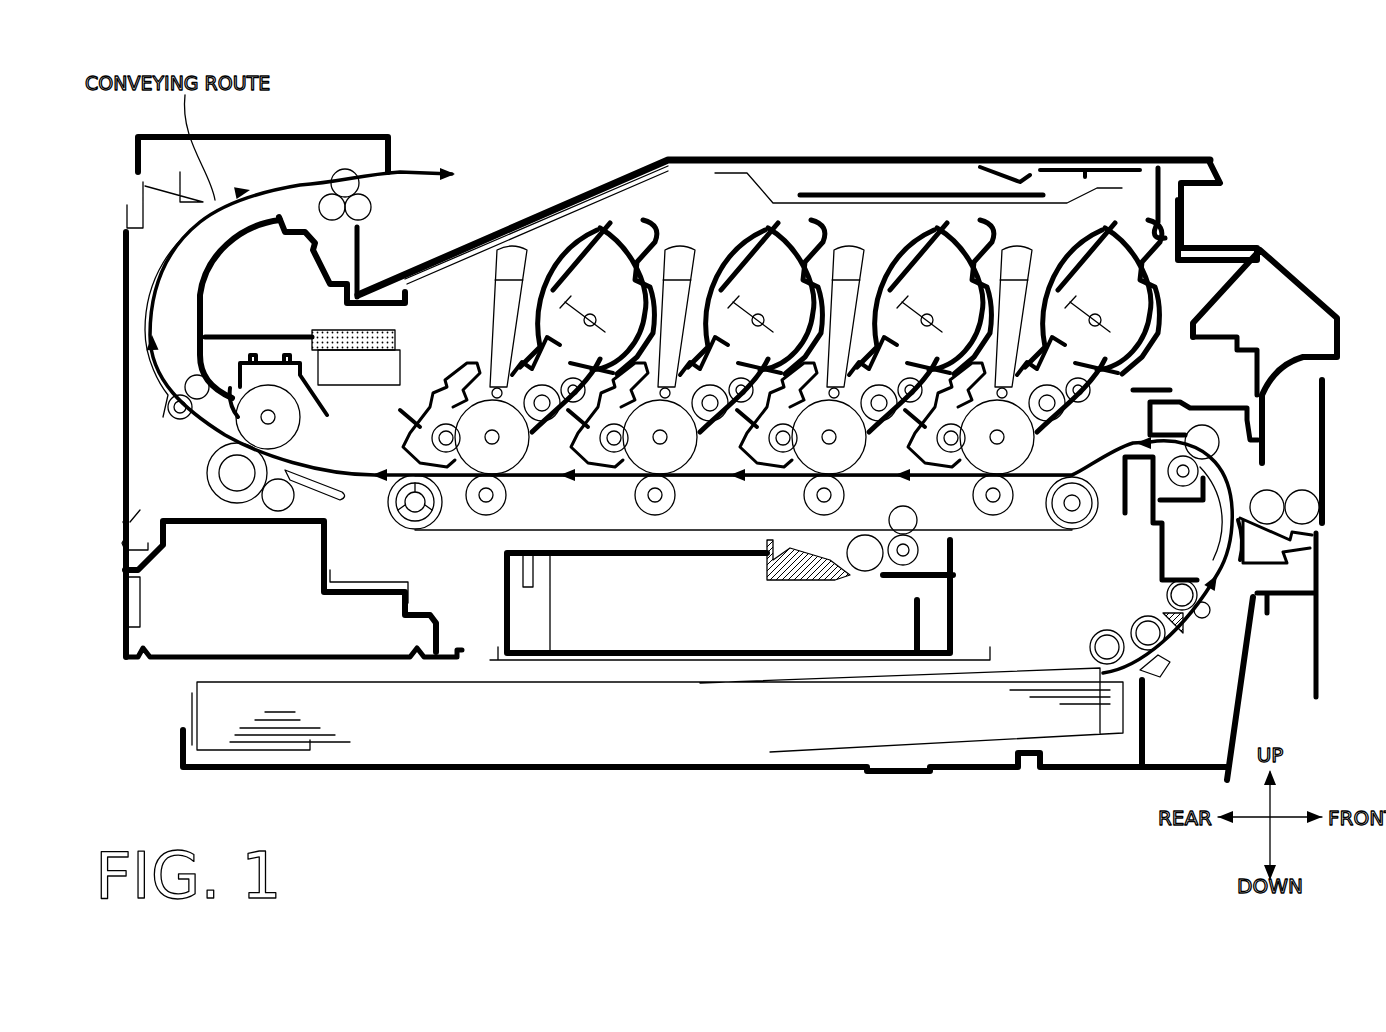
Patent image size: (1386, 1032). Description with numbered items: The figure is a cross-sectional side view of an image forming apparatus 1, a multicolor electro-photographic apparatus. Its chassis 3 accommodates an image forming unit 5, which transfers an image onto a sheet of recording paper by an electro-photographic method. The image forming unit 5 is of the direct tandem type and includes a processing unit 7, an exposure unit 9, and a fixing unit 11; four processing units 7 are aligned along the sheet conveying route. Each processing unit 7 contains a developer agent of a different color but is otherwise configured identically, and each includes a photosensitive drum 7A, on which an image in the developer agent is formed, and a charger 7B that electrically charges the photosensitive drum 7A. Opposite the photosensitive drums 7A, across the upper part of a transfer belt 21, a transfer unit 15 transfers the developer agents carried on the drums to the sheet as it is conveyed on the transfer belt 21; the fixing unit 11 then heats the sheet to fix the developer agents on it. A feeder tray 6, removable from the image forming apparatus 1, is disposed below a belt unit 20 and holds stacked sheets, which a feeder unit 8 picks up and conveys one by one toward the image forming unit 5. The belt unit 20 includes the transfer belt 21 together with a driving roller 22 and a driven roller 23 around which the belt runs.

The image forming apparatus 1 is at (1063, 150).
The chassis 3 is at (700, 152).
The image forming unit 5 is at (1040, 235).
The feeder tray 6 is at (187, 752).
The processing unit 7 is at (630, 235).
The photosensitive drum 7A is at (483, 410).
The charger 7B is at (452, 392).
The feeder unit 8 is at (1185, 643).
The exposure unit 9 is at (522, 367).
The fixing unit 11 is at (217, 440).
The transfer unit 15 is at (486, 516).
The belt unit 20 is at (445, 540).
The transfer belt 21 is at (748, 480).
The driving roller 22 is at (413, 530).
The driven roller 23 is at (1092, 532).